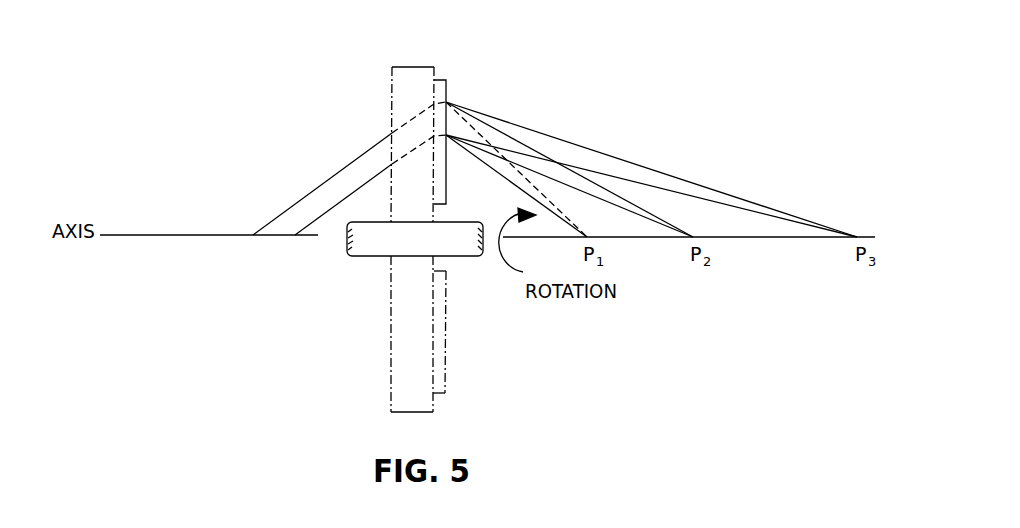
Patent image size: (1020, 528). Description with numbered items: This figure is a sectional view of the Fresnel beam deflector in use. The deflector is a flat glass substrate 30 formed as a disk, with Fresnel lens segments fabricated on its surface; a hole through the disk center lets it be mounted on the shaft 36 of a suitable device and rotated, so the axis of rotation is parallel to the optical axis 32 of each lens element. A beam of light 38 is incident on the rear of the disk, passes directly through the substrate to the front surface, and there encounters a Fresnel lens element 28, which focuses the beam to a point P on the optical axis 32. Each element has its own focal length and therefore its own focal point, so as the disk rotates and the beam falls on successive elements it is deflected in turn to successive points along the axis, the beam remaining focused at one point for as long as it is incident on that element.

The Fresnel lens element 28 is at (447, 190).
The flat glass substrate 30 is at (405, 67).
The optical axis 32 is at (135, 235).
The shaft 36 is at (467, 256).
The beam of light 38 is at (360, 158).